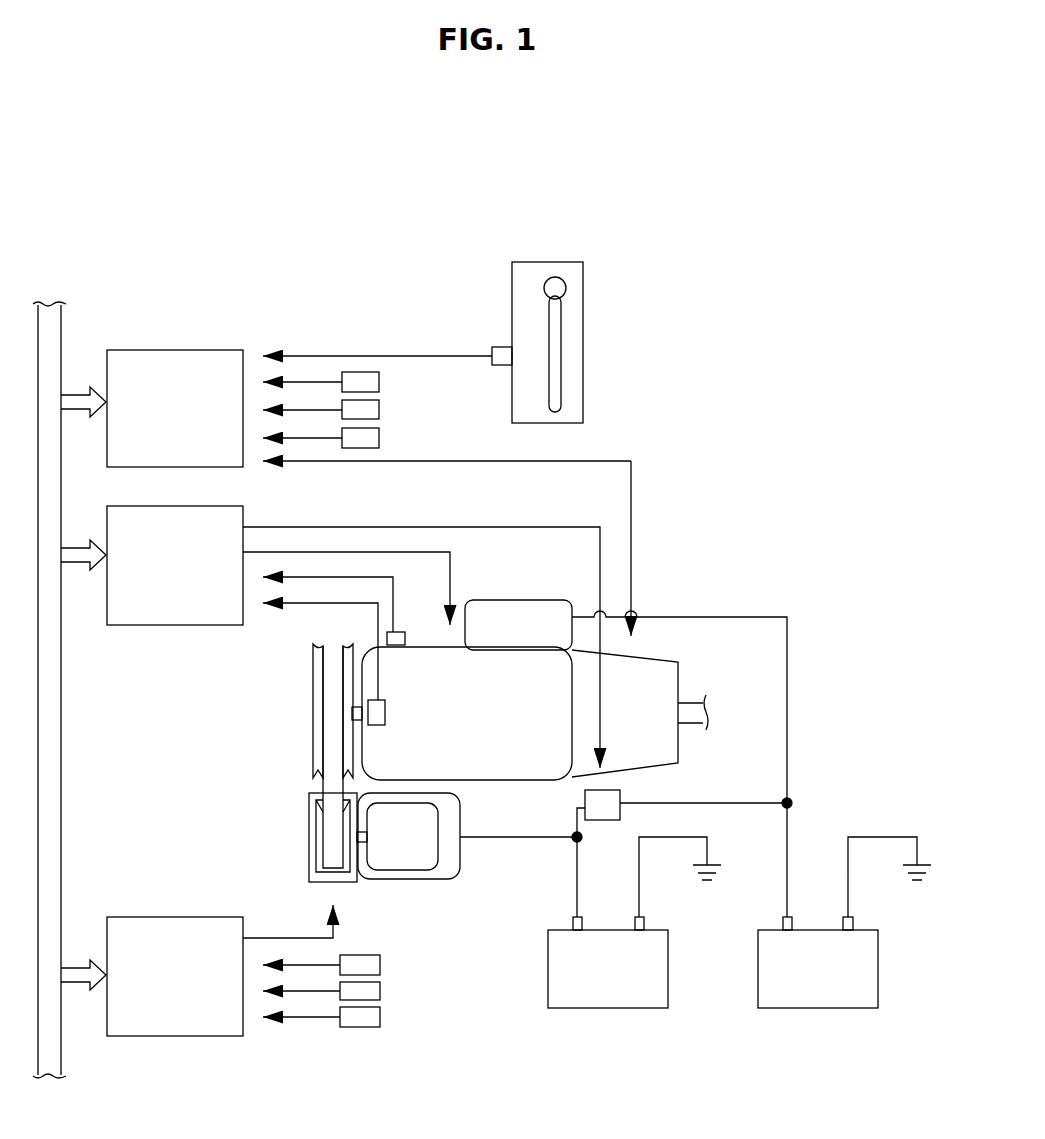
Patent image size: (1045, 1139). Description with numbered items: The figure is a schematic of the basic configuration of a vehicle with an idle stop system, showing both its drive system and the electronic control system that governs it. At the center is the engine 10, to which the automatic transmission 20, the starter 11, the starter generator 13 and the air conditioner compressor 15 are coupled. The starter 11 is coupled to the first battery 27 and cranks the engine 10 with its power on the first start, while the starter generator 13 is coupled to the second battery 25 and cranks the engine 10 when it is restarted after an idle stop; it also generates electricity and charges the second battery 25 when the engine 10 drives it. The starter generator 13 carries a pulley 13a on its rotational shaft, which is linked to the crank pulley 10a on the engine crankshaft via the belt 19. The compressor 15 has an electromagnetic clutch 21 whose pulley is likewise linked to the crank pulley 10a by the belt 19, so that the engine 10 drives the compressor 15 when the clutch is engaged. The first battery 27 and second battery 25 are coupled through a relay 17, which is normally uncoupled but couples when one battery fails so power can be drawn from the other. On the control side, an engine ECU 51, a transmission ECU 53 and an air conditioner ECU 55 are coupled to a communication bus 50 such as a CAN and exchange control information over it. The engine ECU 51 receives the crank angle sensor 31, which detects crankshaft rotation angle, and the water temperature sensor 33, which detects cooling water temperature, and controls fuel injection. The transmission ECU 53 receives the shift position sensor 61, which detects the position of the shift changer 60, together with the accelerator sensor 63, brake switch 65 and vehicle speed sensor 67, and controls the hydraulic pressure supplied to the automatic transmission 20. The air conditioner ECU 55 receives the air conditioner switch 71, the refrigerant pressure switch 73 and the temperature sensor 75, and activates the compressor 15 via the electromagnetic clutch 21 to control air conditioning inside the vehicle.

The engine 10 is at (276, 756).
The crank pulley 10a is at (313, 708).
The starter 11 is at (510, 600).
The starter generator 13 is at (396, 868).
The pulley 13a is at (309, 835).
The air conditioner compressor 15 is at (467, 859).
The relay 17 is at (622, 796).
The belt 19 is at (332, 770).
The automatic transmission 20 is at (672, 688).
The electromagnetic clutch 21 is at (300, 837).
The second battery 25 is at (668, 963).
The first battery 27 is at (878, 963).
The crank angle sensor 31 is at (368, 721).
The water temperature sensor 33 is at (405, 632).
The communication bus 50 is at (61, 745).
The engine ECU 51 is at (215, 506).
The transmission ECU 53 is at (215, 350).
The air conditioner ECU 55 is at (215, 917).
The shift changer 60 is at (583, 322).
The shift position sensor 61 is at (487, 347).
The accelerator sensor 63 is at (379, 384).
The brake switch 65 is at (379, 412).
The vehicle speed sensor 67 is at (379, 440).
The air conditioner switch 71 is at (380, 967).
The refrigerant pressure switch 73 is at (380, 993).
The temperature sensor 75 is at (380, 1019).